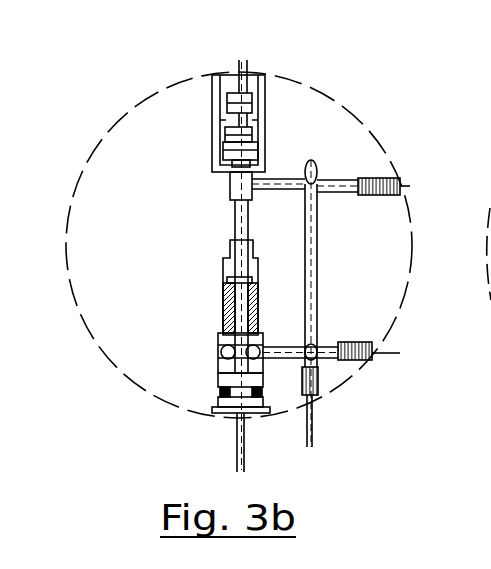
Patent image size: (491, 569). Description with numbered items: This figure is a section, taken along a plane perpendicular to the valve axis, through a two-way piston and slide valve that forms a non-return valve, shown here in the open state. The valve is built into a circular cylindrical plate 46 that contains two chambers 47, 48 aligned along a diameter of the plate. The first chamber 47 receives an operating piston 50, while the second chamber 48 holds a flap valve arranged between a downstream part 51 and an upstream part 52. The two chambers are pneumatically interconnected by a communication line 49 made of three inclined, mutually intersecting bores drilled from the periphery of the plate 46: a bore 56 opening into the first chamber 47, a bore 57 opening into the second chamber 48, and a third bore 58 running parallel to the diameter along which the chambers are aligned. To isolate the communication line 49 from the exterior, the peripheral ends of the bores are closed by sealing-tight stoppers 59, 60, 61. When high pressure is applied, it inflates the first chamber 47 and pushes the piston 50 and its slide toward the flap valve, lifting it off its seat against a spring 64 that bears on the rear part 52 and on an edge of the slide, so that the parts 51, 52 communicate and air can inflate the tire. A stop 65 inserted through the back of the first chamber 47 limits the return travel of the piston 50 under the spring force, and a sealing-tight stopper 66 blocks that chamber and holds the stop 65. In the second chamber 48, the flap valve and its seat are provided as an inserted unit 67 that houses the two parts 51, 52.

The circular cylindrical plate 46 is at (331, 109).
The first chamber 47 is at (217, 355).
The second chamber 48 is at (212, 104).
The communication line 49 is at (316, 238).
The operating piston 50 is at (260, 313).
The downstream part 51 is at (252, 80).
The upstream part 52 is at (252, 190).
The first bore 56 is at (332, 342).
The second bore 57 is at (341, 180).
The third bore 58 is at (317, 283).
The sealing-tight stopper 59 is at (362, 388).
The sealing-tight stopper 60 is at (384, 198).
The sealing-tight stopper 61 is at (323, 395).
The spring 64 is at (230, 186).
The stop 65 is at (223, 323).
The sealing-tight stopper 66 is at (213, 407).
The unit 67 is at (265, 148).